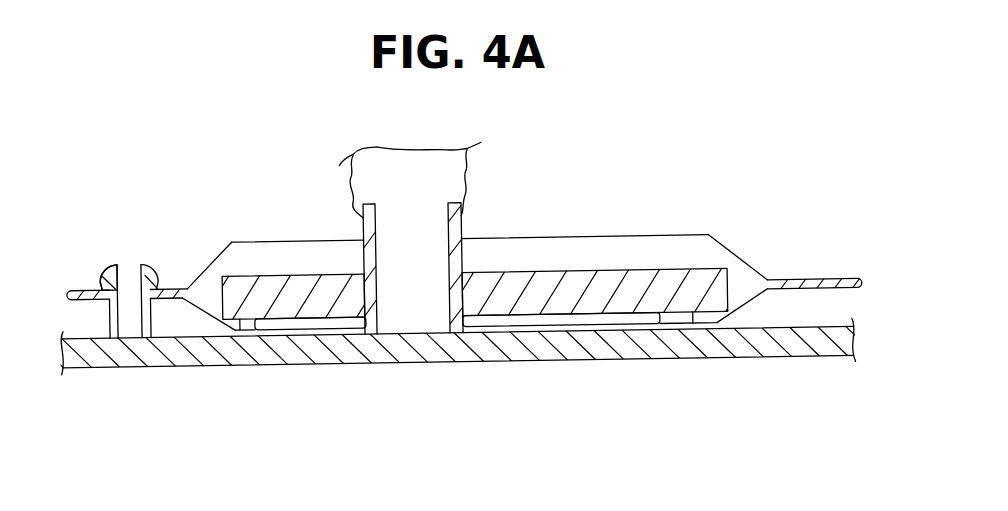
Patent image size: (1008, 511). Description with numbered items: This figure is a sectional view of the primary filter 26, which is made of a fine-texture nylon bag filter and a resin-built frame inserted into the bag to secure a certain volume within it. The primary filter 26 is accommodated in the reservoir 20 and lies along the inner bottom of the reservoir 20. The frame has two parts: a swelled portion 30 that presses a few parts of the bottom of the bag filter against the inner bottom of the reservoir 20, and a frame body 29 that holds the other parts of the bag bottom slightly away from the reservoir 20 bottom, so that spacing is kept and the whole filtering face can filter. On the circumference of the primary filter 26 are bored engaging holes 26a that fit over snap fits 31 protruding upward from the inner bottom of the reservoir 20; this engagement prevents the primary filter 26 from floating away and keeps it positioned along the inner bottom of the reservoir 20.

The reservoir 20 is at (200, 356).
The primary filter 26 is at (308, 240).
The engaging holes 26a is at (110, 304).
The frame body 29 is at (623, 293).
The swelled portion 30 is at (250, 333).
The snap fits 31 is at (112, 265).